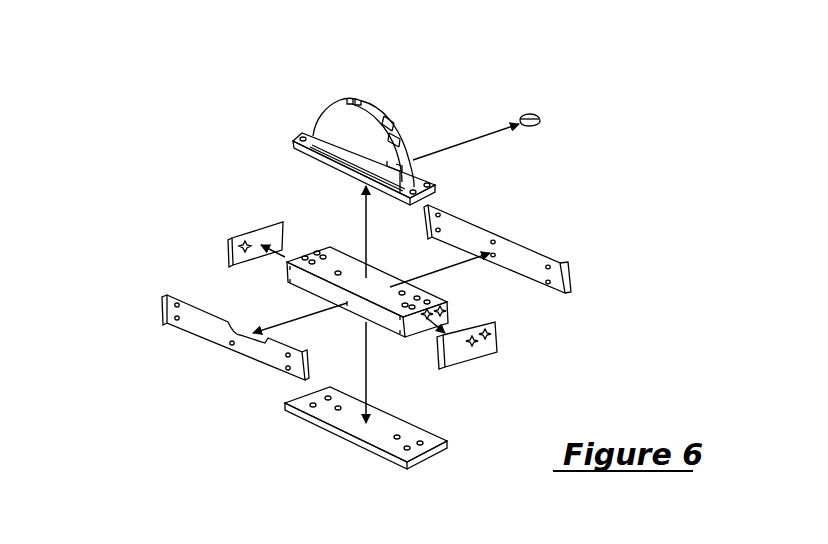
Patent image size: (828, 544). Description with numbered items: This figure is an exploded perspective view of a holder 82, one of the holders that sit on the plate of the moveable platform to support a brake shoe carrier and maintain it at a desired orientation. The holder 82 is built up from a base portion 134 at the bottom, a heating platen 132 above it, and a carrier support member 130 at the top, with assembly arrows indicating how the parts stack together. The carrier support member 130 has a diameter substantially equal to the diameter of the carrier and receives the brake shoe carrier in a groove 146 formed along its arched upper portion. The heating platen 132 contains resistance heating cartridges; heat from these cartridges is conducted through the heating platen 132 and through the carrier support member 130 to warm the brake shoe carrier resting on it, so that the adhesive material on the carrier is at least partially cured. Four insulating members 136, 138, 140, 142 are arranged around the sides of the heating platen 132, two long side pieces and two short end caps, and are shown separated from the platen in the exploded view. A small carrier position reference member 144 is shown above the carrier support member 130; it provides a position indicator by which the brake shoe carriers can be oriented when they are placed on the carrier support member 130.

The holder 82 is at (158, 137).
The carrier support member 130 is at (330, 118).
The heating platen 132 is at (447, 302).
The base portion 134 is at (427, 458).
The insulating member 136 is at (248, 230).
The insulating member 138 is at (500, 228).
The insulating member 140 is at (495, 342).
The insulating member 142 is at (166, 303).
The carrier position reference member 144 is at (527, 115).
The groove 146 is at (397, 121).